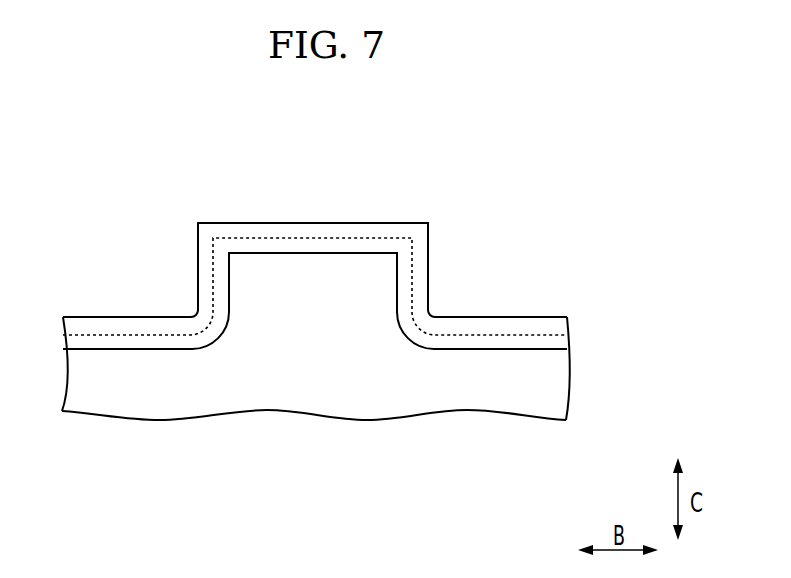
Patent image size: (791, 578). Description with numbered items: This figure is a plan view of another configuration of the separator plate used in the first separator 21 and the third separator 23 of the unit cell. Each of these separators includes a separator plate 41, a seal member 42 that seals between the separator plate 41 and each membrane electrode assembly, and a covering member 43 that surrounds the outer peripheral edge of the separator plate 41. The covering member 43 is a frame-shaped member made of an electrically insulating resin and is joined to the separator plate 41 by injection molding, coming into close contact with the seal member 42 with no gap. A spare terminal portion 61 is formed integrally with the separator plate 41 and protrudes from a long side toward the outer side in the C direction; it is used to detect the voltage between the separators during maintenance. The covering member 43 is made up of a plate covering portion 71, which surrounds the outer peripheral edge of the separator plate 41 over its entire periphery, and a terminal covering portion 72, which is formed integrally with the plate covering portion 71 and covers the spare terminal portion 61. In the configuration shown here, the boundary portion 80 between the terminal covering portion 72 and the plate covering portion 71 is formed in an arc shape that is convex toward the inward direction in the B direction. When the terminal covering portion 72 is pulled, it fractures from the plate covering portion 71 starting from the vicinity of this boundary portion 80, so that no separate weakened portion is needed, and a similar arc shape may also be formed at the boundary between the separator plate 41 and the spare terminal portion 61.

The first separator 21 is at (360, 208).
The third separator 23 is at (427, 209).
The separator plate 41 is at (525, 335).
The seal member 42 is at (322, 367).
The covering member 43 is at (187, 224).
The spare terminal portion 61 is at (305, 238).
The plate covering portion 71 is at (95, 317).
The terminal covering portion 72 is at (383, 232).
The boundary portion 80 is at (195, 317).